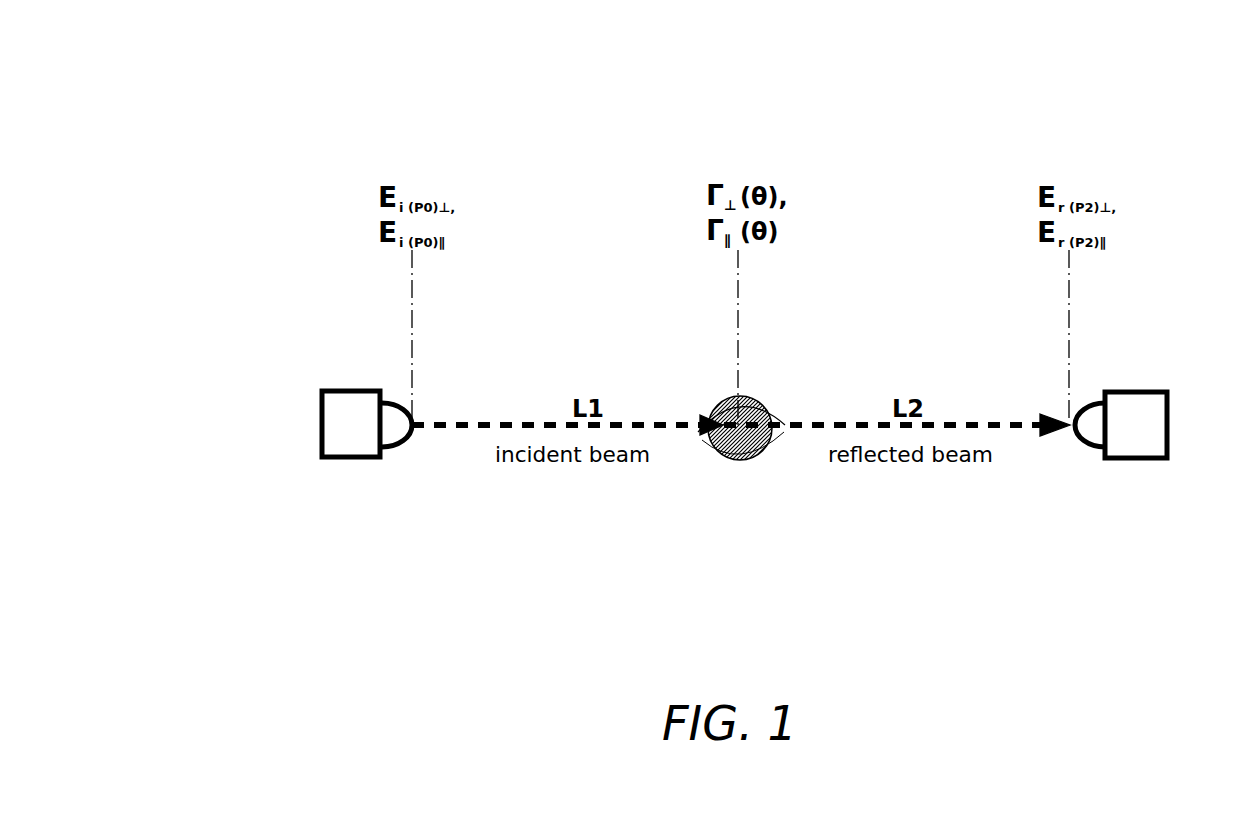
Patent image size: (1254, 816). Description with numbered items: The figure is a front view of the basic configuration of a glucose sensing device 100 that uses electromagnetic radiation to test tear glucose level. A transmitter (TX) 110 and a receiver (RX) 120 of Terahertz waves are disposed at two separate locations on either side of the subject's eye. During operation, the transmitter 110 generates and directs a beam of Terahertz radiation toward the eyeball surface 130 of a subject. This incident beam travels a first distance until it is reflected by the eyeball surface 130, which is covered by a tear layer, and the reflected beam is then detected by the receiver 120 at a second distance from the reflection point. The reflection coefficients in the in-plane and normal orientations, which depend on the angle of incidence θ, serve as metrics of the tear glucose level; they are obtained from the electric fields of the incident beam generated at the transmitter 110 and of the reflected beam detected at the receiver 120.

The glucose sensing device 100 is at (1064, 66).
The transmitter (TX) 110 is at (348, 437).
The receiver (RX) 120 is at (1135, 417).
The eyeball surface 130 is at (718, 458).